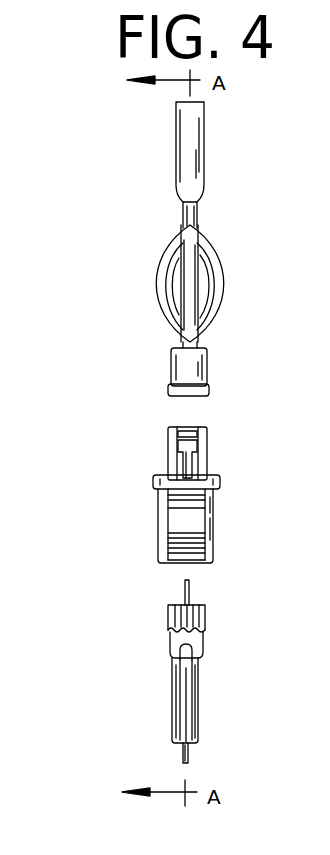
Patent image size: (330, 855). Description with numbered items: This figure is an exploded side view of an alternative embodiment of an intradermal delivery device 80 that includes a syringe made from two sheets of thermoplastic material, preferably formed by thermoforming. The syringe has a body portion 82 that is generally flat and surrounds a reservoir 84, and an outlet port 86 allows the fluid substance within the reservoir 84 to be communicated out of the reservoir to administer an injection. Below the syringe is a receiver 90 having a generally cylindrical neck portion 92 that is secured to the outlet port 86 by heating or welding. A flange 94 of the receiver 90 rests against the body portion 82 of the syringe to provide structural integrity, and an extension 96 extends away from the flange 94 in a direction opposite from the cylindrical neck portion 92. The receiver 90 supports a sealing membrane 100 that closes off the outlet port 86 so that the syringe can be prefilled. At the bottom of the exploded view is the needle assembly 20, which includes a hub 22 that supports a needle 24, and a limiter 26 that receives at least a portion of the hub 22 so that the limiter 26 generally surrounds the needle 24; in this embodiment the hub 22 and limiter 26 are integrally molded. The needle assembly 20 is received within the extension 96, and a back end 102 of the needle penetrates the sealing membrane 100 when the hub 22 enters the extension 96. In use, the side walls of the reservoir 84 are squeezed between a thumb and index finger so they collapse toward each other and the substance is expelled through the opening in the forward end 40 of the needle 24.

The intradermal delivery device 80 is at (101, 205).
The body portion 82 is at (204, 155).
The reservoir 84 is at (162, 316).
The outlet port 86 is at (208, 398).
The receiver 90 is at (225, 523).
The cylindrical neck portion 92 is at (168, 437).
The flange 94 is at (155, 482).
The extension 96 is at (212, 549).
The sealing membrane 100 is at (188, 478).
The needle assembly 20 is at (212, 655).
The hub 22 is at (168, 617).
The needle 24 is at (183, 750).
The limiter 26 is at (195, 712).
The forward end 40 is at (186, 763).
The back end 102 is at (185, 583).